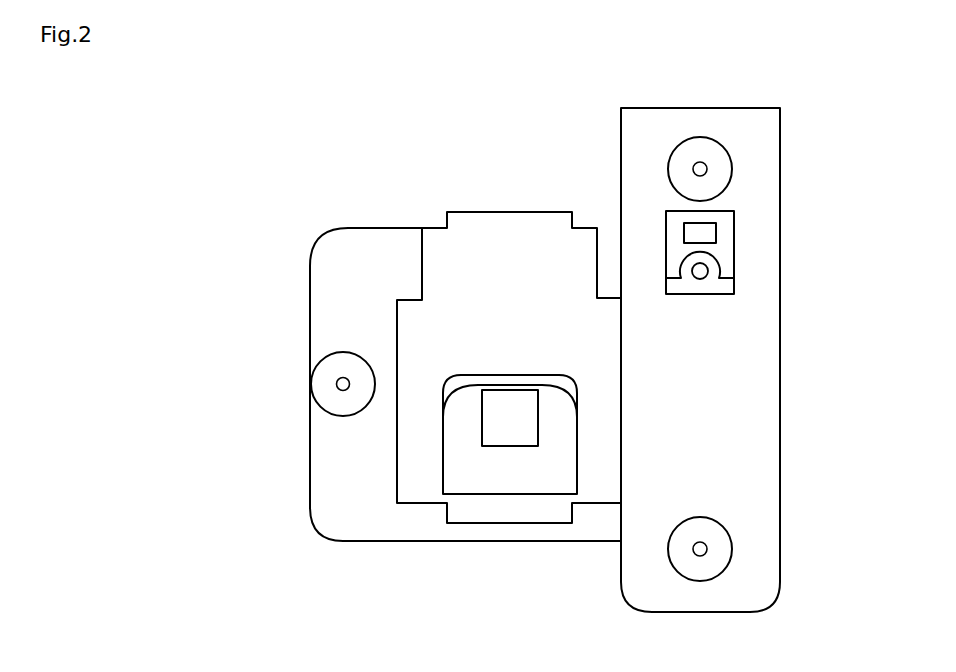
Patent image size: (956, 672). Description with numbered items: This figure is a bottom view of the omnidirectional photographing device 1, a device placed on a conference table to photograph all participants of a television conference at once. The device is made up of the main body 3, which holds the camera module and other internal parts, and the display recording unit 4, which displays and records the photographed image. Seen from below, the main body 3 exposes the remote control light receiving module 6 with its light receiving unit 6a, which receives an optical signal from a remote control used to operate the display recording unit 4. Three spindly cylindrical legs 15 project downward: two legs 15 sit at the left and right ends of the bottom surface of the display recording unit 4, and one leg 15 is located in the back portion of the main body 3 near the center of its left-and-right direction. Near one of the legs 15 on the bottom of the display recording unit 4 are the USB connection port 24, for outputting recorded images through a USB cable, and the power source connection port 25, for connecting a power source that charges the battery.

The omnidirectional photographing device 1 is at (788, 86).
The main body 3 is at (350, 228).
The display recording unit 4 is at (780, 388).
The remote control light receiving module 6 is at (452, 468).
The light receiving unit 6a is at (510, 434).
The legs 15 is at (723, 173).
The USB connection port 24 is at (707, 233).
The power source connection port 25 is at (698, 267).